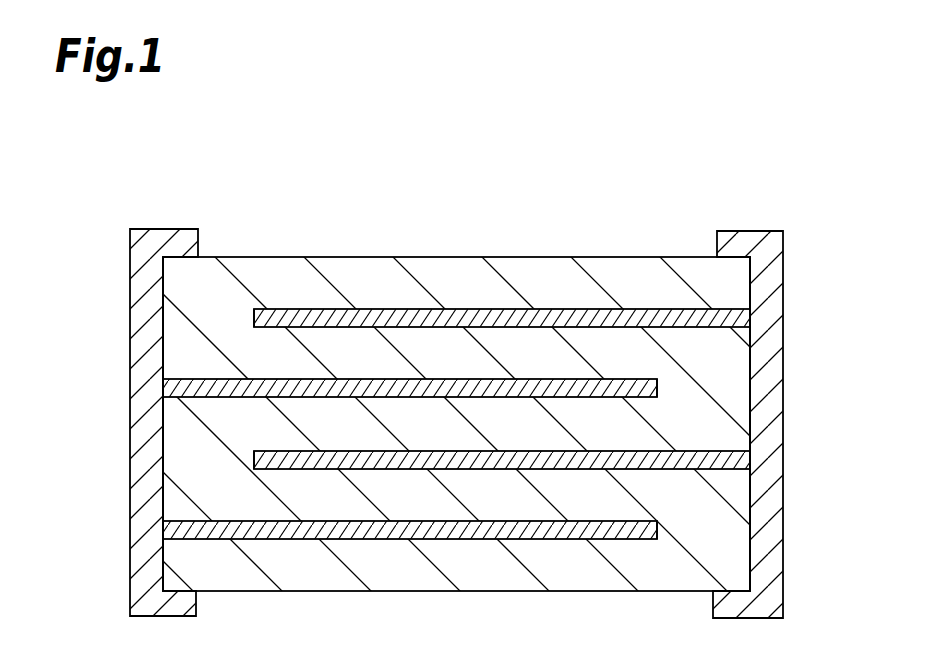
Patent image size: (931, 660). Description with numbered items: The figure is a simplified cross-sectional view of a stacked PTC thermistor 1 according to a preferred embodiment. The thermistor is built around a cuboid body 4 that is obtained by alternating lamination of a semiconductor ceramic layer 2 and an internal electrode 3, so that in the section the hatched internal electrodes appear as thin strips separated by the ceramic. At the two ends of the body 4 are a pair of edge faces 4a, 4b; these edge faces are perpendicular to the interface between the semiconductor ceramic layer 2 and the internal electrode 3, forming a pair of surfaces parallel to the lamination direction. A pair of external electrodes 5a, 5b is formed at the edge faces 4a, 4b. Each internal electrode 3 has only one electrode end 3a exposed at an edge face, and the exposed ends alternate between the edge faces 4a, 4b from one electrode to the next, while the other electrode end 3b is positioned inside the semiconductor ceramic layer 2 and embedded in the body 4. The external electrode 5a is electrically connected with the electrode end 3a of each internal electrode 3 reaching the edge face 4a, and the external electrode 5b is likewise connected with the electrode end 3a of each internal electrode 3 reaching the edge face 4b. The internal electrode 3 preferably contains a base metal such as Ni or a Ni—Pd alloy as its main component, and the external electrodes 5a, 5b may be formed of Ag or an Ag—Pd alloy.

The stacked PTC thermistor 1 is at (696, 150).
The semiconductor ceramic layer 2 is at (180, 505).
The internal electrode 3 is at (213, 380).
The electrode end 3a is at (163, 390).
The electrode end 3b is at (254, 318).
The body 4 is at (261, 245).
The edge face 4a is at (163, 290).
The edge face 4b is at (750, 282).
The external electrode 5a is at (140, 600).
The external electrode 5b is at (770, 583).